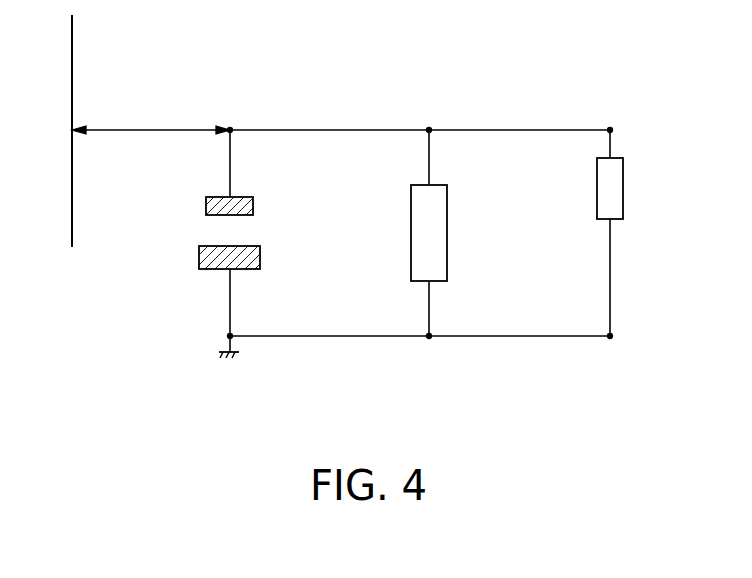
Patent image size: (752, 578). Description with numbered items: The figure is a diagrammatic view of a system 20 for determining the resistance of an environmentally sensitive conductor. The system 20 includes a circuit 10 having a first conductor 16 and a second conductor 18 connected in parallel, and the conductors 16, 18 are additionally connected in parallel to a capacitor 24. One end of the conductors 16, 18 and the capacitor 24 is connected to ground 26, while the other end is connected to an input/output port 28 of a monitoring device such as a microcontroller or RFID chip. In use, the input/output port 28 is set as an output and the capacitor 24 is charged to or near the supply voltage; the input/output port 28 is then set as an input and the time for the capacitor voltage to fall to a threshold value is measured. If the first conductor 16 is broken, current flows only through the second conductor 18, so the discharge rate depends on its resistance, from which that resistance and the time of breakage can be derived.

The circuit 10 is at (503, 123).
The first conductor 16 is at (411, 238).
The second conductor 18 is at (623, 185).
The system 20 is at (104, 334).
The capacitor 24 is at (199, 258).
The ground 26 is at (236, 355).
The input/output port 28 is at (72, 50).